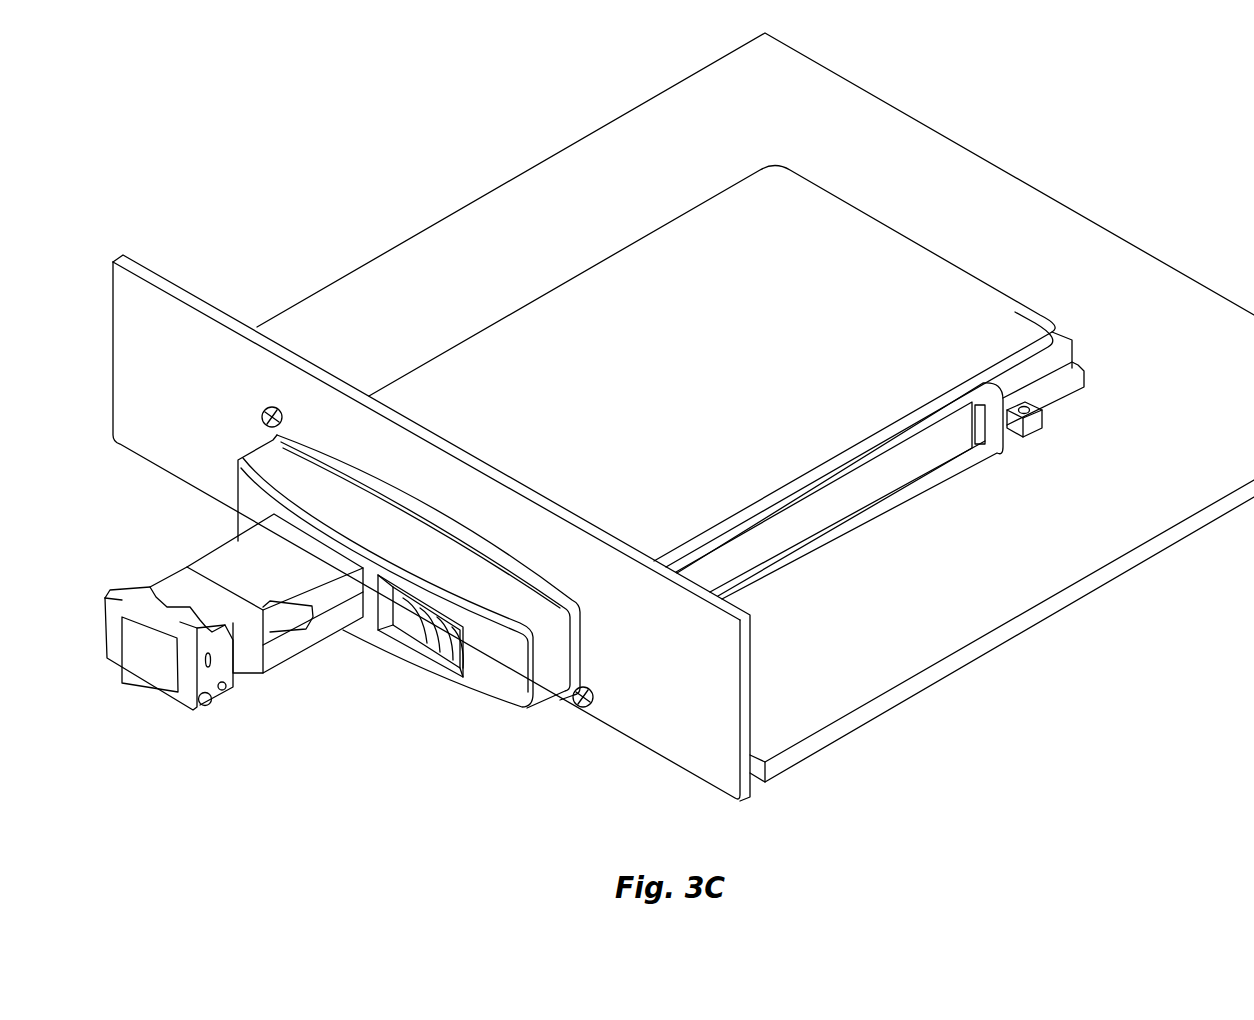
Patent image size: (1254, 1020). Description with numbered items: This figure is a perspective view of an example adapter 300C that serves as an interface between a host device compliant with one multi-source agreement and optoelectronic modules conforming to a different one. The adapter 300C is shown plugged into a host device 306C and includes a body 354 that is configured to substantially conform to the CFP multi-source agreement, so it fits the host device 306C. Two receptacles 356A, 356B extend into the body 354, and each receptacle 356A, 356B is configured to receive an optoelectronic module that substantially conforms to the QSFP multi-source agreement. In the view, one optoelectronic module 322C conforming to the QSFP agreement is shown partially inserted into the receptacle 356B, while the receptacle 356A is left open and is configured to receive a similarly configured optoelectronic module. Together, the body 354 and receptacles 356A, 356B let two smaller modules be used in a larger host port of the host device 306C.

The adapter 300C is at (520, 769).
The host device 306C is at (733, 783).
The body 354 is at (720, 385).
The receptacle 356A is at (428, 645).
The receptacle 356B is at (349, 632).
The optoelectronic module 322C is at (167, 573).